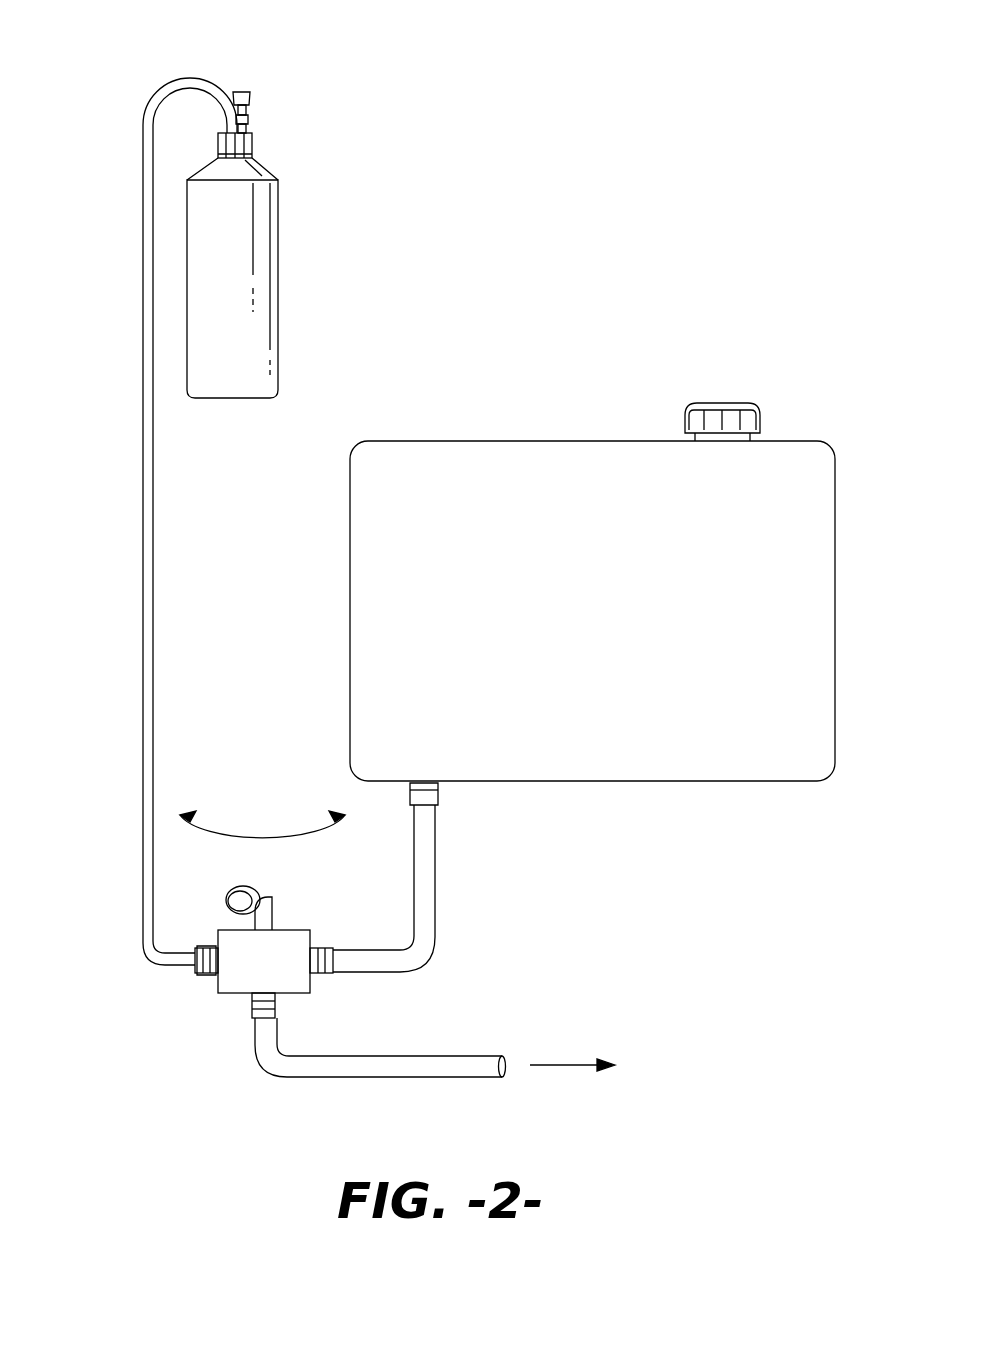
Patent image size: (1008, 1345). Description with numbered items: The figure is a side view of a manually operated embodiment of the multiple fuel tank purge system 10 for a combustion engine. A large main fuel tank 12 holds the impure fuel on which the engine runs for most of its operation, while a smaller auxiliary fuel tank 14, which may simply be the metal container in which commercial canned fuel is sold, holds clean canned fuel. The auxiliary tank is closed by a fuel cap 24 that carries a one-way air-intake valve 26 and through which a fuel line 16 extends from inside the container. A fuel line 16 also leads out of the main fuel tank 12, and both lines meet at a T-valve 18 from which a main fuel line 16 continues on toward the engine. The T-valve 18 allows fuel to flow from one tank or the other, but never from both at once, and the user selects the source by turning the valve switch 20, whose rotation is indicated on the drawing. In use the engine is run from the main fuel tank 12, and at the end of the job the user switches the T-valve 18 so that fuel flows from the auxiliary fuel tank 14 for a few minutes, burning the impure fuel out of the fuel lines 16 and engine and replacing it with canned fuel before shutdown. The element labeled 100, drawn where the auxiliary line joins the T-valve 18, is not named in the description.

The multiple fuel tank purge system 10 is at (197, 1078).
The main fuel tank 12 is at (528, 488).
The auxiliary fuel tank 14 is at (278, 267).
The fuel line 16 is at (143, 518).
The T-valve 18 is at (238, 975).
The valve switch 20 is at (248, 895).
The fuel cap 24 is at (253, 147).
The air-intake valve 26 is at (250, 97).
The fitting 100 is at (197, 946).